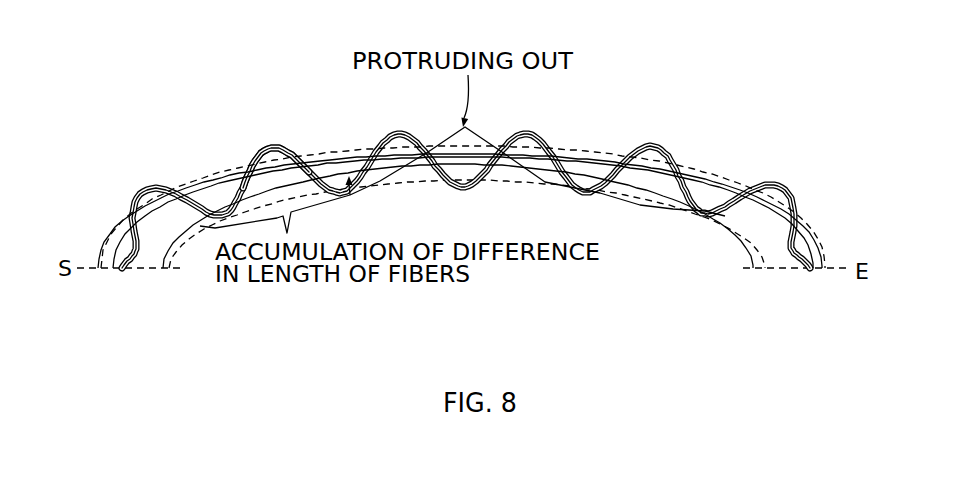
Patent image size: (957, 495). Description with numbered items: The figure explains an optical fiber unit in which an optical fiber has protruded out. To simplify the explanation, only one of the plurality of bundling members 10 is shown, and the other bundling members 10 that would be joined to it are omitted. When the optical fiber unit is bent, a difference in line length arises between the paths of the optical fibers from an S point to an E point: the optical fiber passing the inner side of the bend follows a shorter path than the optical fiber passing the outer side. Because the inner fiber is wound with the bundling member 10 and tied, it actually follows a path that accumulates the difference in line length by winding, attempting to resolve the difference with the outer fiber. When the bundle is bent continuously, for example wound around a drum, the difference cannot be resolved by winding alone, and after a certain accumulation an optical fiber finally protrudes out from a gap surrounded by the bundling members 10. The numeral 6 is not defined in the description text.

The fiber layer 6 is at (616, 152).
The bundling member 10 is at (266, 146).